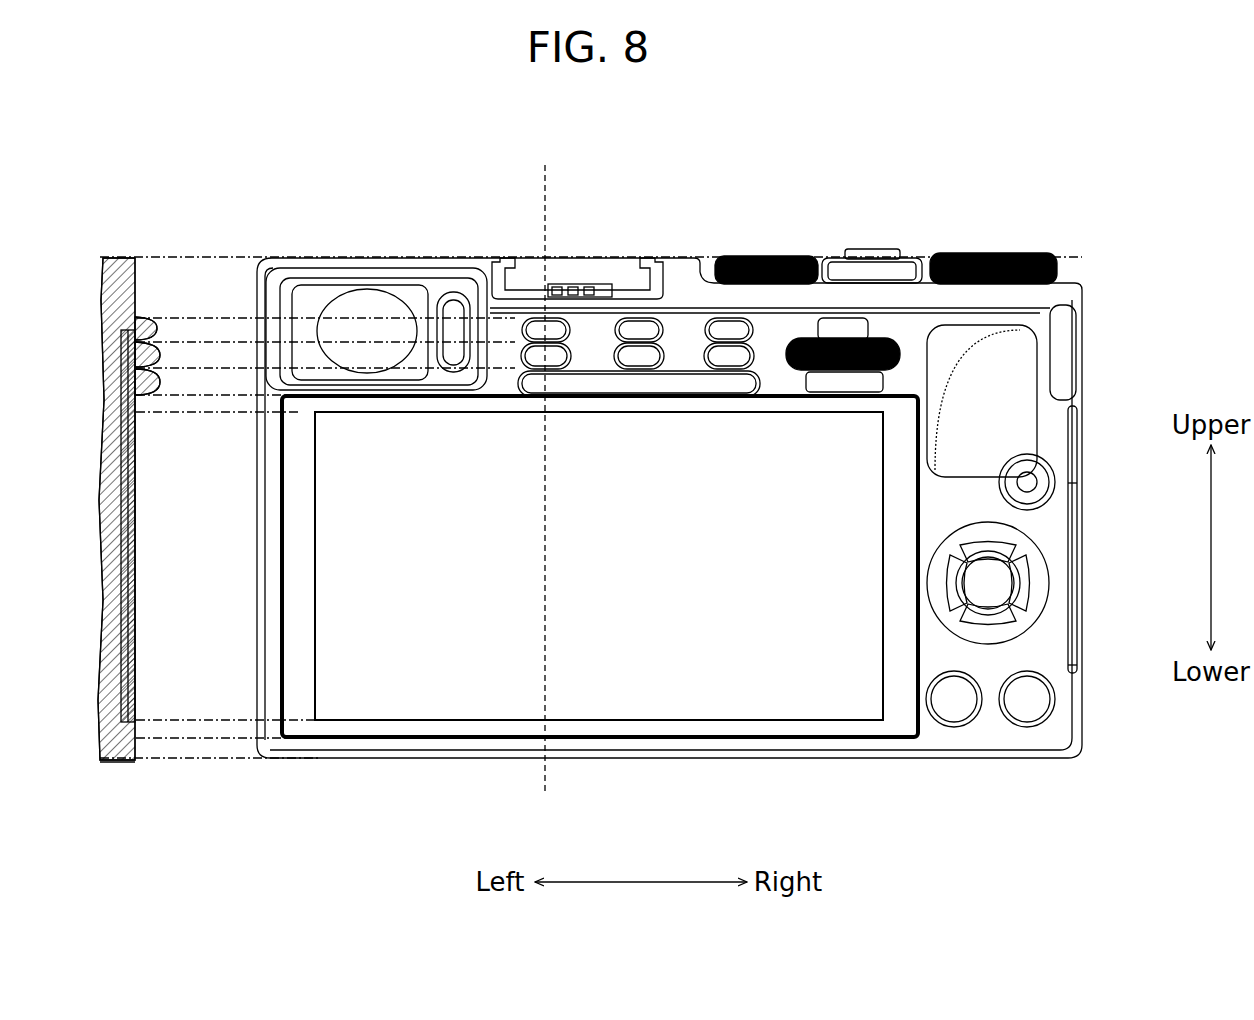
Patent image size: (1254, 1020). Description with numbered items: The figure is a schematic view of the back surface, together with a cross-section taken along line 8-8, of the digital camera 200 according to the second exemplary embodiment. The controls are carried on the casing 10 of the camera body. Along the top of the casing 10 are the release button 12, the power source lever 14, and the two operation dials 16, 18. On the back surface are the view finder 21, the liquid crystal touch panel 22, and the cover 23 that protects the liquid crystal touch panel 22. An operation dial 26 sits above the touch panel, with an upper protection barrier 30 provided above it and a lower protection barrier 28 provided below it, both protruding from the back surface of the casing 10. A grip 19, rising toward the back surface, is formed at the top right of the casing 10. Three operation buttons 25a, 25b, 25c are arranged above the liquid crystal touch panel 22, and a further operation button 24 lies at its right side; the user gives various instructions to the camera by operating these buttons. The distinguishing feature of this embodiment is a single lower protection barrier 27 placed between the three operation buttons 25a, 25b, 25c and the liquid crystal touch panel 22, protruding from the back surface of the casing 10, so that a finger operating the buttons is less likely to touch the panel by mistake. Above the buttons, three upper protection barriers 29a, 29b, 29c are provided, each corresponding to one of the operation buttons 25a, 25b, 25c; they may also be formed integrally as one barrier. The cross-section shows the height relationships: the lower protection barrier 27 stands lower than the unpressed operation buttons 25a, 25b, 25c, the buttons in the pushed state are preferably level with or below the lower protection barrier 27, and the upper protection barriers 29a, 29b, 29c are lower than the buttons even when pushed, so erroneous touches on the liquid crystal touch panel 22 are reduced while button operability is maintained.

The digital camera 200 is at (238, 193).
The casing 10 is at (106, 258).
The section line 8 is at (545, 162).
The view finder 21 is at (370, 300).
The liquid crystal touch panel 22 is at (136, 592).
The cover 23 is at (136, 658).
The operation button 25a is at (524, 345).
The operation button 25b is at (617, 327).
The operation button 25c is at (707, 327).
The upper protection barrier 29a is at (145, 320).
The upper protection barrier 29b is at (662, 352).
The upper protection barrier 29c is at (752, 352).
The lower protection barrier 27 is at (628, 386).
The operation dial 26 is at (790, 340).
The operation dial 18 is at (767, 256).
The power source lever 14 is at (824, 258).
The release button 12 is at (878, 249).
The operation dial 16 is at (1000, 253).
The upper protection barrier 30 is at (868, 328).
The lower protection barrier 28 is at (975, 474).
The grip 19 is at (1080, 390).
The operation button 24 is at (1027, 617).